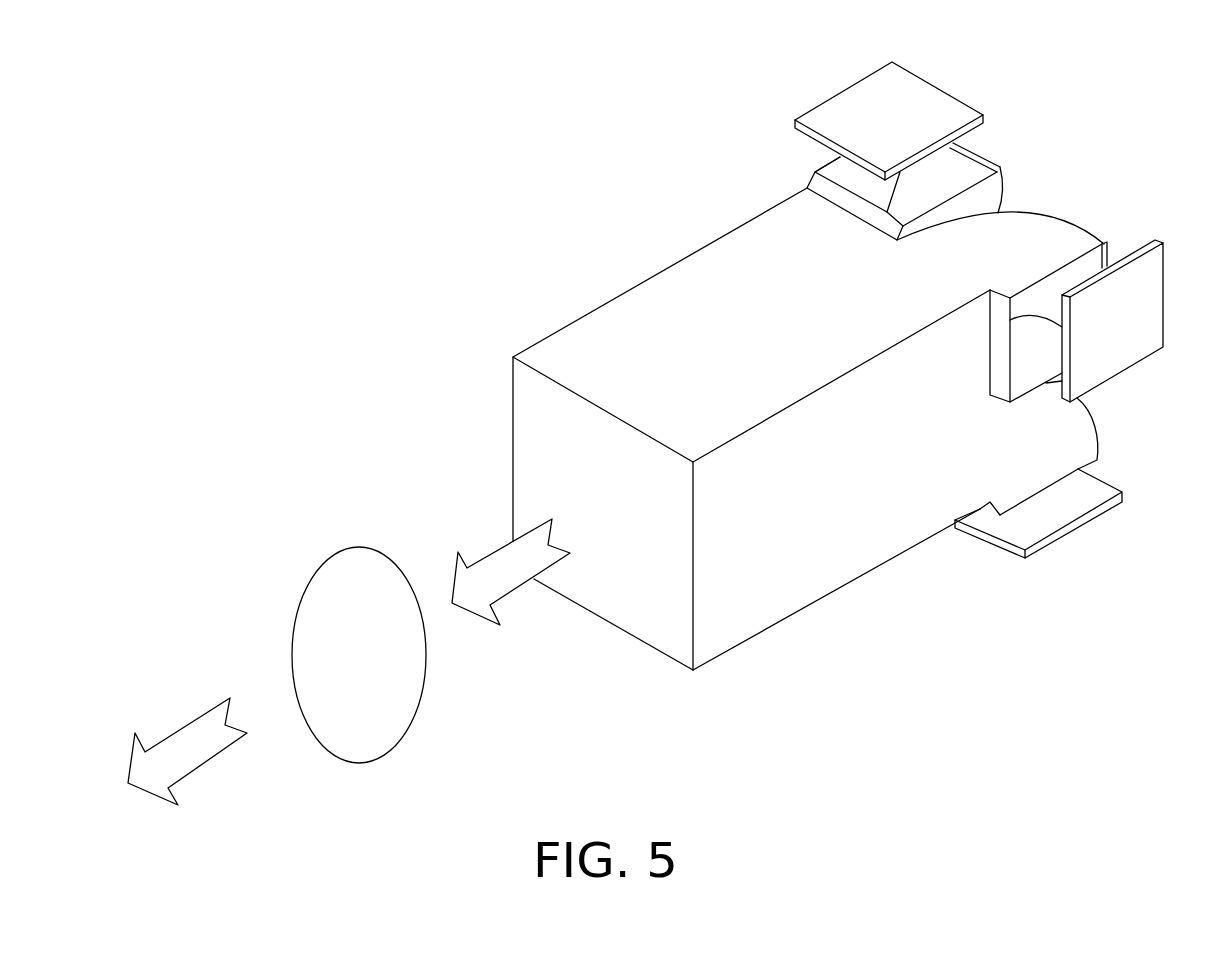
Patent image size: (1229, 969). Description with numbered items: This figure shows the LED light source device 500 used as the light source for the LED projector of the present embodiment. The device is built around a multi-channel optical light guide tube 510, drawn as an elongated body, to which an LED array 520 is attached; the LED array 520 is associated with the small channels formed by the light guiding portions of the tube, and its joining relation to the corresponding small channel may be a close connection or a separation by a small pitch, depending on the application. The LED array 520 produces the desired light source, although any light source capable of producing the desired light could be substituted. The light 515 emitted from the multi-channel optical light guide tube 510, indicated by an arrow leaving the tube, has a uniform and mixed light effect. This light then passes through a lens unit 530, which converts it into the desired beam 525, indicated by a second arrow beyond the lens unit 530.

The LED light source device 500 is at (1172, 44).
The multi-channel optical light guide tube 510 is at (680, 258).
The light 515 is at (491, 565).
The LED array 520 is at (940, 83).
The beam 525 is at (178, 727).
The lens unit 530 is at (348, 547).